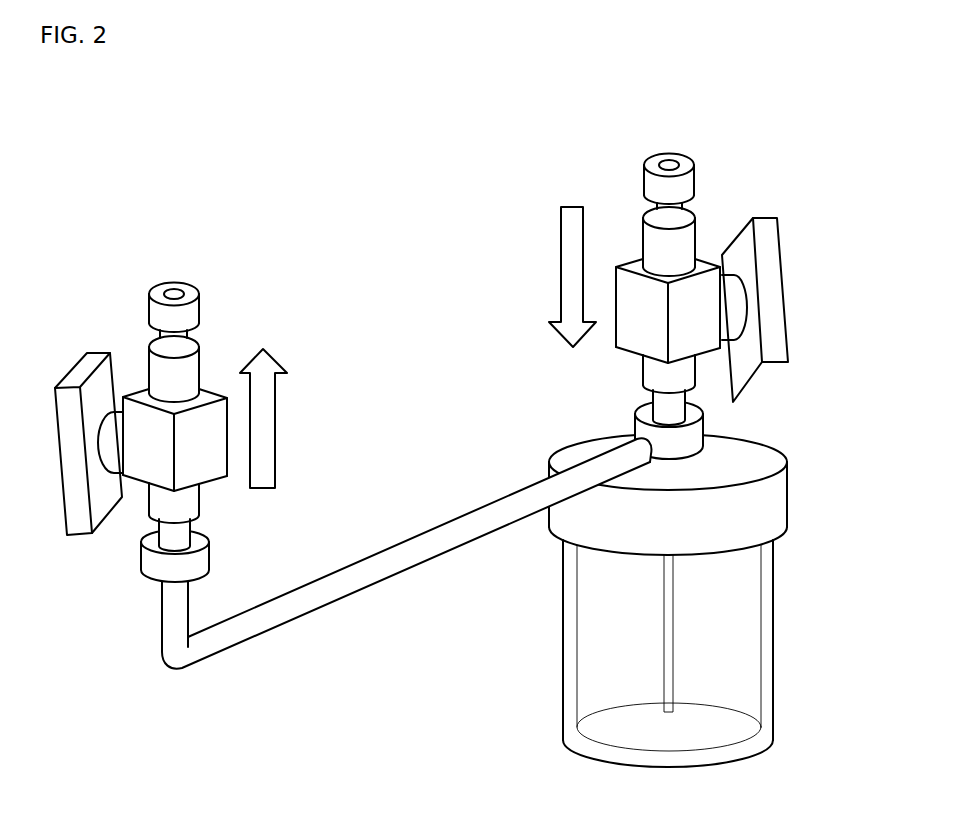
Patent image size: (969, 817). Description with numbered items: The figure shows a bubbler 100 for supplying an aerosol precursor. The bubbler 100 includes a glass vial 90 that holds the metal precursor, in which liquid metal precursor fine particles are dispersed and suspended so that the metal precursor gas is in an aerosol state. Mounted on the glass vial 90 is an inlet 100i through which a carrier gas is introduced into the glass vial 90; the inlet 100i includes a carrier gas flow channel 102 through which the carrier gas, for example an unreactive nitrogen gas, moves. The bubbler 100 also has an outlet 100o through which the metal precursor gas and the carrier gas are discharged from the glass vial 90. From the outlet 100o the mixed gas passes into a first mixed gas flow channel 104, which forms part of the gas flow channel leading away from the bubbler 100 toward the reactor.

The bubbler 100 is at (113, 150).
The outlet 100o is at (181, 415).
The inlet 100i is at (749, 307).
The carrier gas flow channel 102 is at (680, 240).
The first mixed gas flow channel 104 is at (190, 368).
The glass vial 90 is at (773, 637).